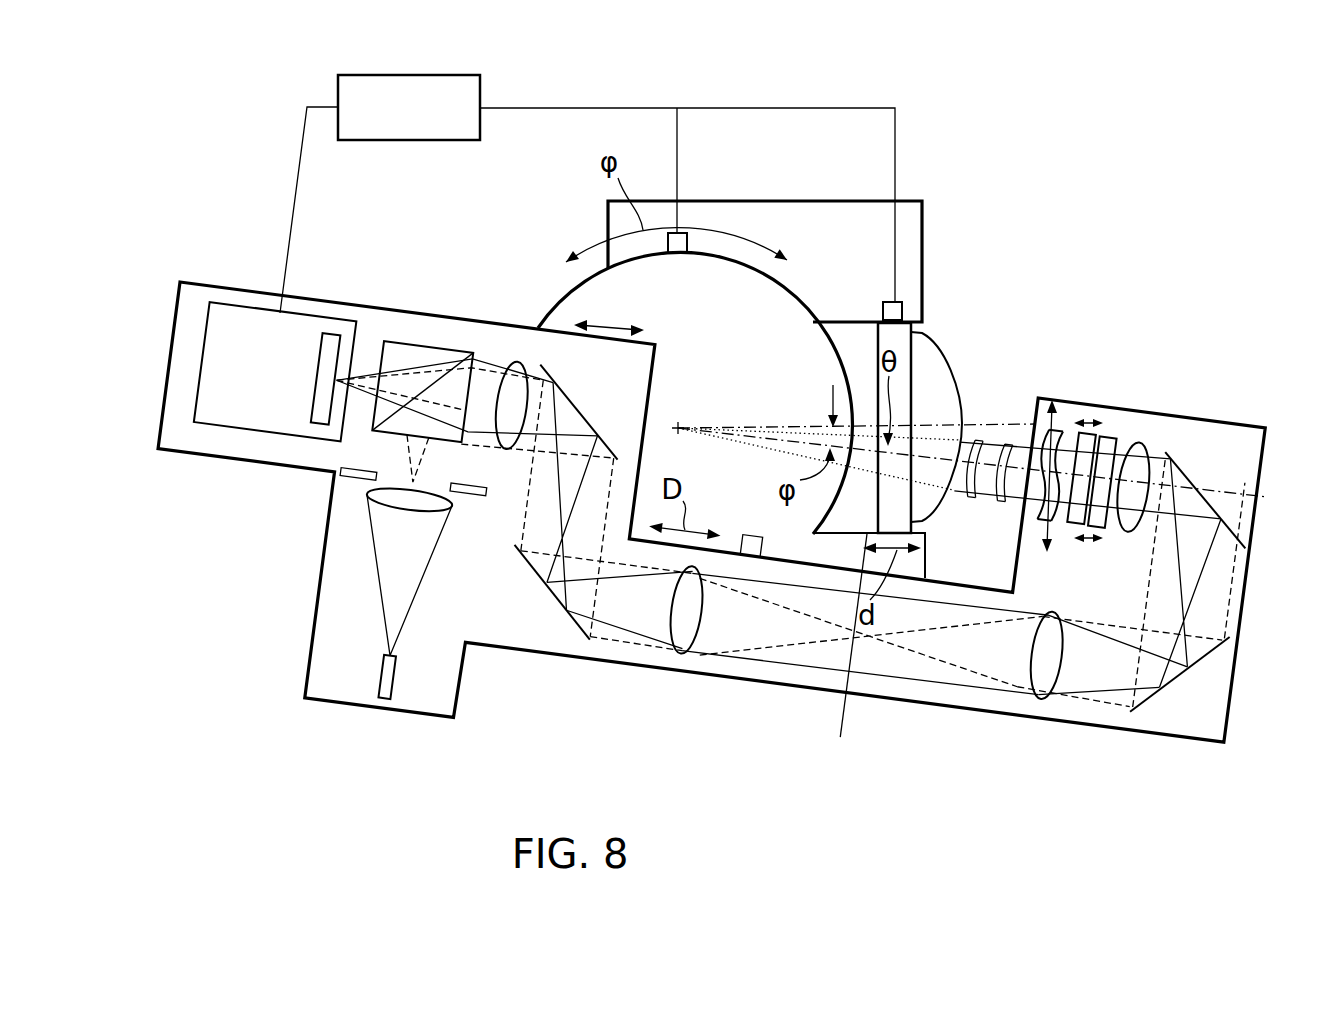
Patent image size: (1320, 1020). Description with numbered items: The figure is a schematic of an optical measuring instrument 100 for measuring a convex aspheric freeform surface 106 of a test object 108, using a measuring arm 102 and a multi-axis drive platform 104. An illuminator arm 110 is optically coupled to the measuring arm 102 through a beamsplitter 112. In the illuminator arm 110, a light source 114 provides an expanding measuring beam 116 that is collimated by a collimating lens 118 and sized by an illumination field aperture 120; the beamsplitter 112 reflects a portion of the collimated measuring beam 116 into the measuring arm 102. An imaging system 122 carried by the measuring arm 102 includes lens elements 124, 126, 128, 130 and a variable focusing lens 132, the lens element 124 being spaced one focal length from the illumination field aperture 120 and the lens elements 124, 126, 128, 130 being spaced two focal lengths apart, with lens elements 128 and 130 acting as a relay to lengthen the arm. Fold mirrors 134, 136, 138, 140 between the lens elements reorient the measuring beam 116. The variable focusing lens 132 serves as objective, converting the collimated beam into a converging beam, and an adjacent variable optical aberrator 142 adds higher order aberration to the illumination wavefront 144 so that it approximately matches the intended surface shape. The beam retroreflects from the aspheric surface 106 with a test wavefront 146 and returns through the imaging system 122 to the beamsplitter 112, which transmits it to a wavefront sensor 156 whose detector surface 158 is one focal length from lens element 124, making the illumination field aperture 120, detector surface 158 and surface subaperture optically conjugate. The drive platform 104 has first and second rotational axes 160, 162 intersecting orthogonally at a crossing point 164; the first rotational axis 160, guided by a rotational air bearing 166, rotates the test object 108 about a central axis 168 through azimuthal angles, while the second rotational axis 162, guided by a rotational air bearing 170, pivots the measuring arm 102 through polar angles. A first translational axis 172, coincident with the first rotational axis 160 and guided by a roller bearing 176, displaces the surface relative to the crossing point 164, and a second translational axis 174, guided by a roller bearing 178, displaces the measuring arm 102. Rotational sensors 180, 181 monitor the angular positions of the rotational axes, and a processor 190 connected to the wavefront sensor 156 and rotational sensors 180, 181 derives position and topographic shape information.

The optical measuring instrument 100 is at (587, 163).
The measuring arm 102 is at (692, 508).
The multi-axis drive platform 104 is at (913, 195).
The convex aspheric freeform surface 106 is at (958, 373).
The test object 108 is at (920, 372).
The illuminator arm 110 is at (692, 550).
The beamsplitter 112 is at (428, 378).
The light source 114 is at (390, 680).
The measuring beam 116 is at (366, 548).
The collimating lens 118 is at (455, 510).
The illumination field aperture 120 is at (383, 453).
The 8f imaging system 122 is at (635, 652).
The lens element 124 is at (513, 357).
The lens element 126 is at (695, 657).
The lens element 128 is at (1040, 703).
The lens element 130 is at (1140, 447).
The variable focusing lens 132 is at (1107, 426).
The fold mirror 134 is at (583, 412).
The fold mirror 136 is at (696, 550).
The fold mirror 138 is at (1177, 745).
The fold mirror 140 is at (178, 628).
The variable optical aberrator 142 is at (1059, 418).
The illumination wavefront 144 is at (1027, 440).
The test wavefront 146 is at (955, 480).
The wavefront sensor 156 is at (222, 337).
The detector surface 158 is at (340, 356).
The first rotational axis 160 is at (856, 366).
The second rotational axis 162 is at (811, 405).
The crossing point 164 is at (678, 424).
The rotational air bearing 166 is at (841, 670).
The central axis 168 is at (856, 366).
The rotational air bearing 170 is at (718, 260).
The first translational axis 172 is at (805, 423).
The second translational axis 174 is at (797, 443).
The roller bearing 176 is at (841, 670).
The roller bearing 178 is at (550, 353).
The rotational sensor 180 is at (883, 305).
The rotational sensor 181 is at (688, 242).
The processor 190 is at (428, 123).